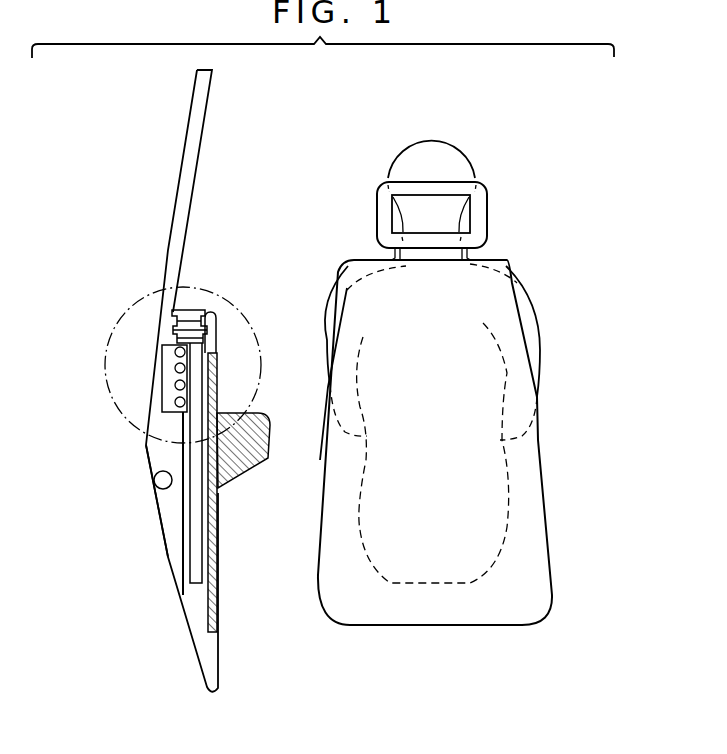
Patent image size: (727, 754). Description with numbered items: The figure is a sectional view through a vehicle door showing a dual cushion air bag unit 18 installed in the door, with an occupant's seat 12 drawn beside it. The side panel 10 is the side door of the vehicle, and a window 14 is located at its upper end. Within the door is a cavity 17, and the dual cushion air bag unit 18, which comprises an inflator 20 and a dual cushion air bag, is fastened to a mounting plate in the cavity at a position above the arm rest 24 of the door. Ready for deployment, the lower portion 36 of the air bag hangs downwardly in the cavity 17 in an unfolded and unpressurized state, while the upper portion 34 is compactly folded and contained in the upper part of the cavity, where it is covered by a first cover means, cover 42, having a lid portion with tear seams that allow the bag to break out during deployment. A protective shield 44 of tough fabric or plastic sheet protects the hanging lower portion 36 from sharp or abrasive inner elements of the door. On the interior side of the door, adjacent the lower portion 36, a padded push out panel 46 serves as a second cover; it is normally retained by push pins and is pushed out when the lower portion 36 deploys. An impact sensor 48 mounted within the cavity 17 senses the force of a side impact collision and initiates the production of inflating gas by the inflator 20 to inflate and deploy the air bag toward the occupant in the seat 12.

The side panel 10 is at (160, 543).
The seat 12 is at (540, 533).
The window 14 is at (186, 149).
The cavity 17 is at (158, 452).
The dual cushion air bag unit 18 is at (118, 422).
The inflator 20 is at (168, 393).
The arm rest 24 is at (250, 463).
The upper portion of the air bag 34 is at (175, 328).
The lower portion of the air bag 36 is at (197, 385).
The cover 42 is at (205, 317).
The protective shield 44 is at (177, 582).
The padded push out panel 46 is at (218, 623).
The impact sensor 48 is at (156, 485).